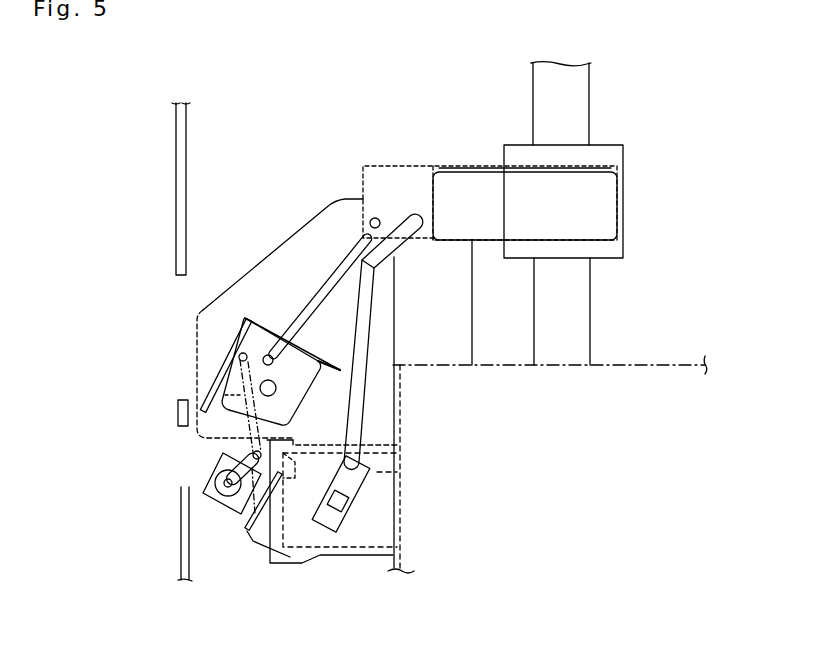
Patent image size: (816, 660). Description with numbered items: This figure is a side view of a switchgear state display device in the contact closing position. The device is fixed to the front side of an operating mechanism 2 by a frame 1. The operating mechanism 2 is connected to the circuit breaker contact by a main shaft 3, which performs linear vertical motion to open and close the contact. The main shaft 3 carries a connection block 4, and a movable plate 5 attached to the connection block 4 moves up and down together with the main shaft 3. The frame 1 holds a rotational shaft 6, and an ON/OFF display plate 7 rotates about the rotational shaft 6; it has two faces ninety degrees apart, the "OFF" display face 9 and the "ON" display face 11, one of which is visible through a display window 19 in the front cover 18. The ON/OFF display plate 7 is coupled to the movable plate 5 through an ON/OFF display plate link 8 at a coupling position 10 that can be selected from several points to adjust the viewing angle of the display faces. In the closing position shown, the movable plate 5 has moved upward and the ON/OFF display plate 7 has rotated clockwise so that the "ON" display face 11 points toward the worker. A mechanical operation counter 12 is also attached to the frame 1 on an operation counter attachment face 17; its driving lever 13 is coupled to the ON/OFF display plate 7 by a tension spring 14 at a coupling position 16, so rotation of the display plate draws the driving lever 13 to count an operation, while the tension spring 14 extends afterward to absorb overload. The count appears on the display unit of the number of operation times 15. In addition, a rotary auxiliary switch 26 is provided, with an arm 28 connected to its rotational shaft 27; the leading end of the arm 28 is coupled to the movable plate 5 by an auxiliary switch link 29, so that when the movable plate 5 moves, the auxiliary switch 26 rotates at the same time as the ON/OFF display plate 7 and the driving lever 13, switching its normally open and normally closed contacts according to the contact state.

The frame 1 is at (310, 230).
The operating mechanism 2 is at (675, 363).
The main shaft 3 is at (585, 108).
The connection block 4 is at (621, 150).
The movable plate 5 is at (607, 200).
The rotational shaft 6 is at (277, 388).
The ON/OFF display plate 7 is at (293, 397).
The ON/OFF display plate link 8 is at (305, 312).
The "OFF" display face 9 is at (325, 352).
The coupling position 10 is at (273, 358).
The "ON" display face 11 is at (240, 325).
The mechanical operation counter 12 is at (222, 505).
The driving lever 13 is at (250, 505).
The tension spring 14 is at (175, 410).
The display unit of the number of operation times 15 is at (208, 477).
The coupling position 16 is at (239, 357).
The operation counter attachment face 17 is at (272, 535).
The front cover 18 is at (180, 548).
The display window 19 is at (177, 330).
The rotary auxiliary switch 26 is at (380, 528).
The rotational shaft 27 is at (347, 502).
The arm 28 is at (353, 487).
The auxiliary switch link 29 is at (374, 279).